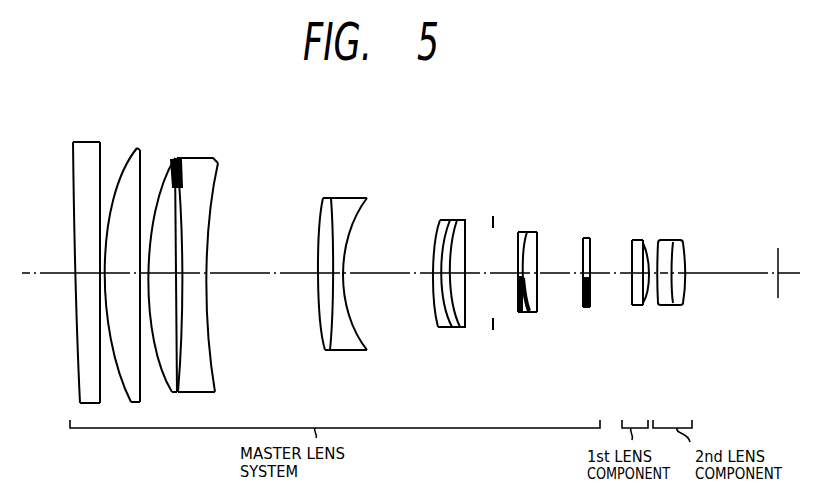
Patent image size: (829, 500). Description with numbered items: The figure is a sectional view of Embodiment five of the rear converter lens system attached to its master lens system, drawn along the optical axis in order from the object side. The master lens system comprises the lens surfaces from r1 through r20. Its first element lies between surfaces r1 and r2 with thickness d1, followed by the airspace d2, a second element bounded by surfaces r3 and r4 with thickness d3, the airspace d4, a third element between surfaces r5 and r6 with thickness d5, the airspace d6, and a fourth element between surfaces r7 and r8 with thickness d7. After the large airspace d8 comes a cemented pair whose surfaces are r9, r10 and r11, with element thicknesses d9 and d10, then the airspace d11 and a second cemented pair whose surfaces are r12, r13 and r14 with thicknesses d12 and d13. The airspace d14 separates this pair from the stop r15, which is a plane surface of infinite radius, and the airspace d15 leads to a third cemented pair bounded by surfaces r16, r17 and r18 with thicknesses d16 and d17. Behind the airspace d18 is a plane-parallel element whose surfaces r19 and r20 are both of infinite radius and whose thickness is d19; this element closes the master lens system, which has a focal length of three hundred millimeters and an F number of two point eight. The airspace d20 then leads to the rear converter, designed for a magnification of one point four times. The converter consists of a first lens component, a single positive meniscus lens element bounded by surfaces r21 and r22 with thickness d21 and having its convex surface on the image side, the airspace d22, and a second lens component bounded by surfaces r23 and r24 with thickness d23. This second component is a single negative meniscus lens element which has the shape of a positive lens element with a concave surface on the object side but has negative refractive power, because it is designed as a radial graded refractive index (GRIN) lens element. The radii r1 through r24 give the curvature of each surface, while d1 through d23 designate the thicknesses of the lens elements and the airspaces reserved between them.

The radius of curvature of first lens surface r1 is at (80, 157).
The radius of curvature of second lens surface r2 is at (96, 142).
The radius of curvature of third lens surface r3 is at (124, 161).
The radius of curvature of fourth lens surface r4 is at (137, 147).
The radius of curvature of fifth lens surface r5 is at (161, 178).
The radius of curvature of sixth lens surface r6 is at (175, 158).
The radius of curvature of seventh lens surface r7 is at (187, 158).
The radius of curvature of eighth lens surface r8 is at (210, 158).
The radius of curvature of ninth lens surface r9 is at (318, 222).
The radius of curvature of tenth lens surface r10 is at (330, 198).
The radius of curvature of eleventh lens surface r11 is at (355, 198).
The radius of curvature of twelfth lens surface r12 is at (440, 218).
The radius of curvature of thirteenth lens surface r13 is at (449, 218).
The radius of curvature of fourteenth lens surface r14 is at (466, 218).
The stop r15 is at (494, 225).
The radius of curvature of sixteenth lens surface r16 is at (517, 234).
The radius of curvature of seventeenth lens surface r17 is at (524, 232).
The radius of curvature of eighteenth lens surface r18 is at (538, 238).
The radius of curvature of nineteenth lens surface r19 is at (582, 247).
The radius of curvature of twentieth lens surface r20 is at (591, 245).
The radius of curvature of twenty-first lens surface r21 is at (630, 248).
The radius of curvature of twenty-second lens surface r22 is at (637, 241).
The radius of curvature of twenty-third lens surface r23 is at (664, 240).
The radius of curvature of twenty-fourth lens surface r24 is at (685, 246).
The thickness of first lens element d1 is at (83, 274).
The airspace between first and second lens elements d2 is at (98, 277).
The thickness of second lens element d3 is at (115, 275).
The airspace between second and third lens elements d4 is at (140, 272).
The thickness of third lens element d5 is at (158, 275).
The airspace between third and fourth lens elements d6 is at (186, 268).
The thickness of fourth lens element d7 is at (195, 275).
The airspace between fourth and fifth lens elements d8 is at (243, 275).
The thickness of fifth lens element d9 is at (323, 275).
The thickness of sixth lens element d10 is at (347, 275).
The airspace between sixth and seventh lens elements d11 is at (392, 275).
The thickness of seventh lens element d12 is at (437, 282).
The thickness of eighth lens element d13 is at (452, 328).
The airspace between eighth lens element and stop d14 is at (468, 275).
The airspace between stop and ninth lens element d15 is at (502, 275).
The thickness of ninth lens element d16 is at (520, 275).
The thickness of tenth lens element d17 is at (530, 305).
The airspace between tenth and eleventh lens elements d18 is at (553, 275).
The thickness of eleventh lens element d19 is at (592, 306).
The airspace between master lens system and first lens component d20 is at (608, 275).
The thickness of first lens component d21 is at (639, 306).
The airspace between first and second lens components d22 is at (651, 272).
The thickness of second lens component d23 is at (672, 306).